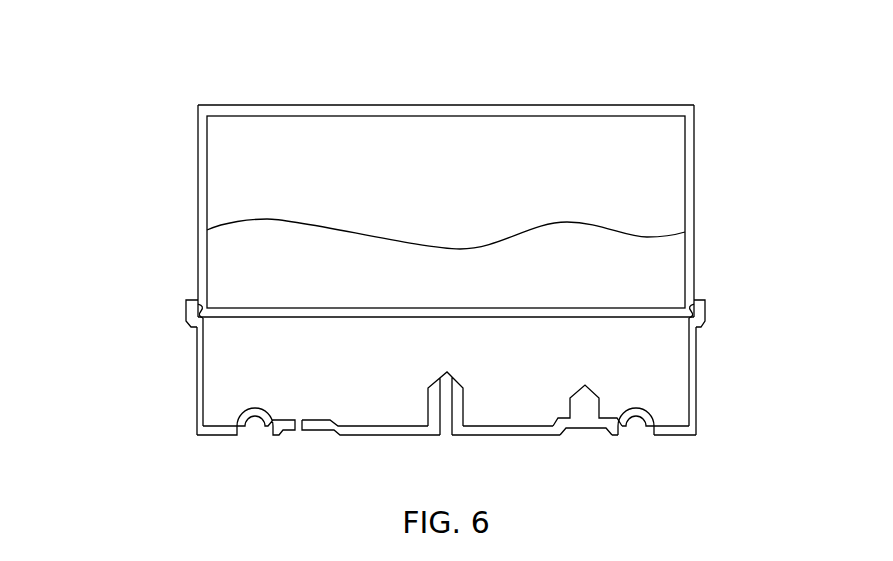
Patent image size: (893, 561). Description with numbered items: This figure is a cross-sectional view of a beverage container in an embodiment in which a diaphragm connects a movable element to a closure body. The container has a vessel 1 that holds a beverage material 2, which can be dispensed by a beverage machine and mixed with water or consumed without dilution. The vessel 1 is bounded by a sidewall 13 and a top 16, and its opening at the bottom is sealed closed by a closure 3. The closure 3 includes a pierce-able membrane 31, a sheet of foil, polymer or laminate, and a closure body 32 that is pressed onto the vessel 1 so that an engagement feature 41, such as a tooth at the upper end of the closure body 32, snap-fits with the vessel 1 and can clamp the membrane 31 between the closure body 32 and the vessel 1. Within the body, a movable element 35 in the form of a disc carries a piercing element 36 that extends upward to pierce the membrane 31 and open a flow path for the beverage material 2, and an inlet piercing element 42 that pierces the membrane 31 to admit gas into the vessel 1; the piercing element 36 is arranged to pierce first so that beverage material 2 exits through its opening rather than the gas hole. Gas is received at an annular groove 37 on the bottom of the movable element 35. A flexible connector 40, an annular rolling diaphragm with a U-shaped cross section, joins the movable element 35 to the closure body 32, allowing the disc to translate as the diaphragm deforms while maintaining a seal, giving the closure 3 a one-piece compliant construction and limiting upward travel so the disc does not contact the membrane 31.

The vessel 1 is at (149, 104).
The beverage material 2 is at (662, 270).
The closure 3 is at (88, 338).
The sidewall 13 is at (694, 148).
The top 16 is at (473, 105).
The pierce-able membrane 31 is at (640, 317).
The closure body 32 is at (196, 410).
The movable element 35 is at (395, 437).
The piercing element 36 is at (463, 396).
The annular groove 37 is at (287, 432).
The flexible connector 40 is at (636, 418).
The engagement feature 41 is at (706, 302).
The inlet piercing element 42 is at (578, 400).